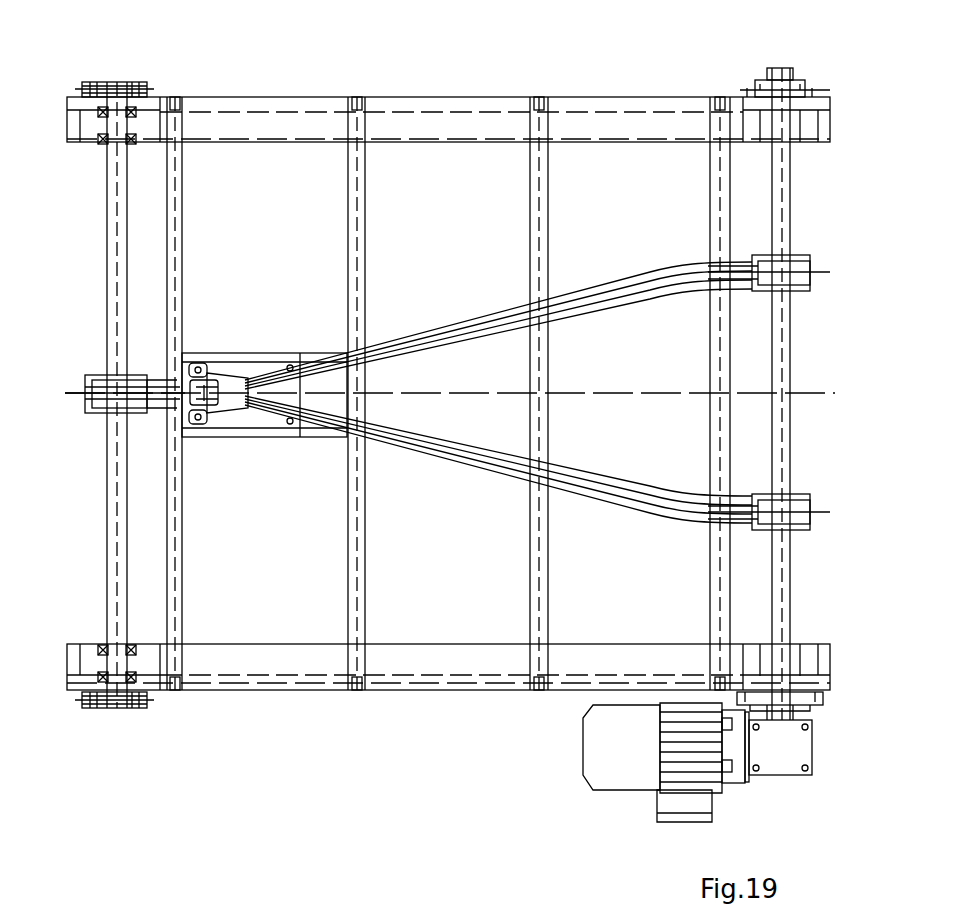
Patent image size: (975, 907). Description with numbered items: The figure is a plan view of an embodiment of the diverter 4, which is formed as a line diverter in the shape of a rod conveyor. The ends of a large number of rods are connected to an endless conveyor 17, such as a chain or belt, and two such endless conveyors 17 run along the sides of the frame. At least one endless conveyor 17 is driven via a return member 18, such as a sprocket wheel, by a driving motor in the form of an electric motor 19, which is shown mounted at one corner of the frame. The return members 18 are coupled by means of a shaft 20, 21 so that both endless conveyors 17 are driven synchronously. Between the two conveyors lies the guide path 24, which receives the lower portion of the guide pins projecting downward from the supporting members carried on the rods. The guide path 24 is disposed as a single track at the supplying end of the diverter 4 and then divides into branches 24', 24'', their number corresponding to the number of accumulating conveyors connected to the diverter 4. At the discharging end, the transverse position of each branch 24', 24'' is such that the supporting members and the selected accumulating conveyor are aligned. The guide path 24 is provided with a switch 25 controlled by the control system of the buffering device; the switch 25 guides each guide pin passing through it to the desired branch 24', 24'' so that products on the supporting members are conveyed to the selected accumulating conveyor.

The diverter 4 is at (755, 55).
The endless conveyor 17 is at (195, 660).
The return member 18 is at (105, 140).
The electric motor 19 is at (765, 748).
The shaft 20 is at (783, 340).
The shaft 21 is at (112, 273).
The guide path 24 is at (104, 369).
The branch of the guide path 24' is at (570, 463).
The branch of the guide path 24'' is at (573, 293).
The switch 25 is at (250, 365).